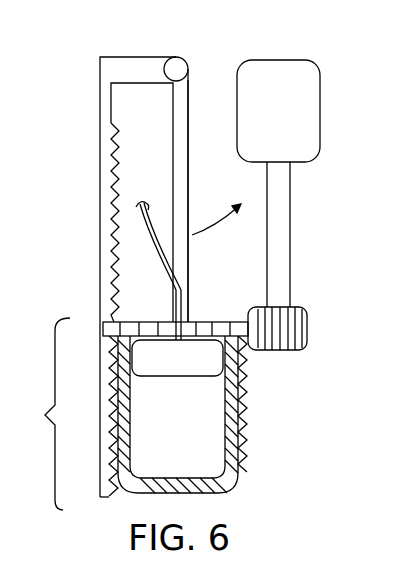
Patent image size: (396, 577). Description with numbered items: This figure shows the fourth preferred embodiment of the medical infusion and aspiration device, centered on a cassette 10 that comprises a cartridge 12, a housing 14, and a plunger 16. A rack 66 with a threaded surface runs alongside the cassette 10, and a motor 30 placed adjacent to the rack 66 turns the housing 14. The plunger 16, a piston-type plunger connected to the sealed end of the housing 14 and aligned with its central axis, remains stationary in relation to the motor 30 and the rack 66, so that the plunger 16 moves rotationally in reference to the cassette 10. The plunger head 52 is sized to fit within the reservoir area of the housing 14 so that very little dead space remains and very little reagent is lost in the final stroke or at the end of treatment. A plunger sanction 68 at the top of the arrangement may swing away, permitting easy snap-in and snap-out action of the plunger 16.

The cassette 10 is at (44, 414).
The cartridge 12 is at (240, 480).
The housing 14 is at (100, 327).
The plunger 16 is at (180, 264).
The motor 30 is at (277, 68).
The plunger head 52 is at (213, 363).
The rack 66 is at (99, 188).
The plunger sanction 68 is at (180, 100).